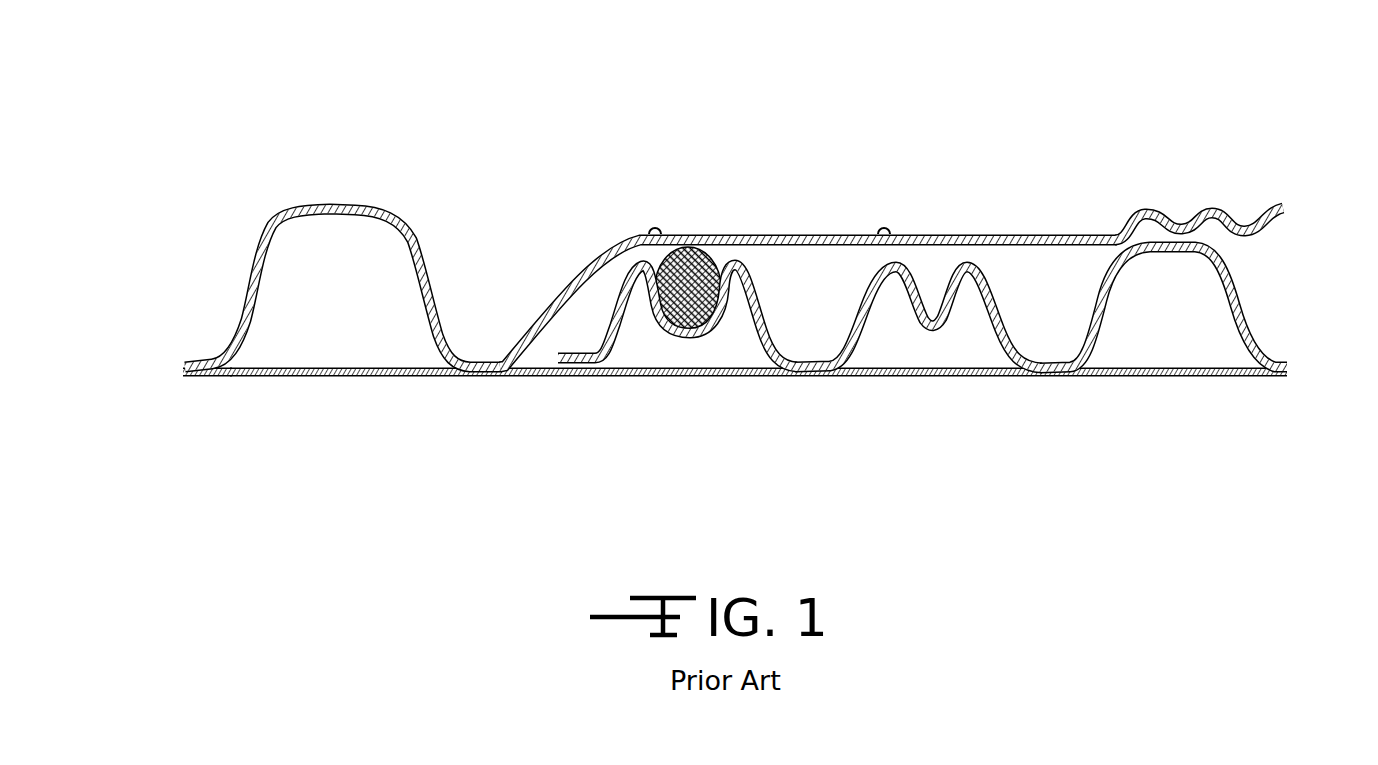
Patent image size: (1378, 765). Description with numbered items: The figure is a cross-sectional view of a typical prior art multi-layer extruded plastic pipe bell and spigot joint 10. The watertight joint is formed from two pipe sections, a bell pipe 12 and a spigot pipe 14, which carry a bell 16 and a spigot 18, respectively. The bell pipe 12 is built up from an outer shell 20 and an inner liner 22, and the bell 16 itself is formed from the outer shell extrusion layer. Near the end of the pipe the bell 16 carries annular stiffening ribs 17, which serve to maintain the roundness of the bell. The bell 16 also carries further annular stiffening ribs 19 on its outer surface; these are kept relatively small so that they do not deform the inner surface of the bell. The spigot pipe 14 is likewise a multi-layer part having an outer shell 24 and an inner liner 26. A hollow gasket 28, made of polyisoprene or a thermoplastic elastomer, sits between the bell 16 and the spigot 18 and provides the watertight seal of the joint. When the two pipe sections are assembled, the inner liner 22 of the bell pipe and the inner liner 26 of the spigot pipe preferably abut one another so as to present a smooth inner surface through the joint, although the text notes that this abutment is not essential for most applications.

The multi-layer extruded plastic pipe bell and spigot joint 10 is at (182, 257).
The bell pipe 12 is at (206, 390).
The spigot pipe 14 is at (1268, 335).
The bell 16 is at (546, 262).
The annular stiffening ribs 17 is at (1126, 204).
The spigot 18 is at (928, 390).
The annular stiffening ribs 19 is at (655, 233).
The outer shell 20 is at (343, 205).
The inner liner 22 is at (362, 378).
The outer shell 24 is at (1240, 296).
The inner liner 26 is at (754, 378).
The gasket 28 is at (662, 325).